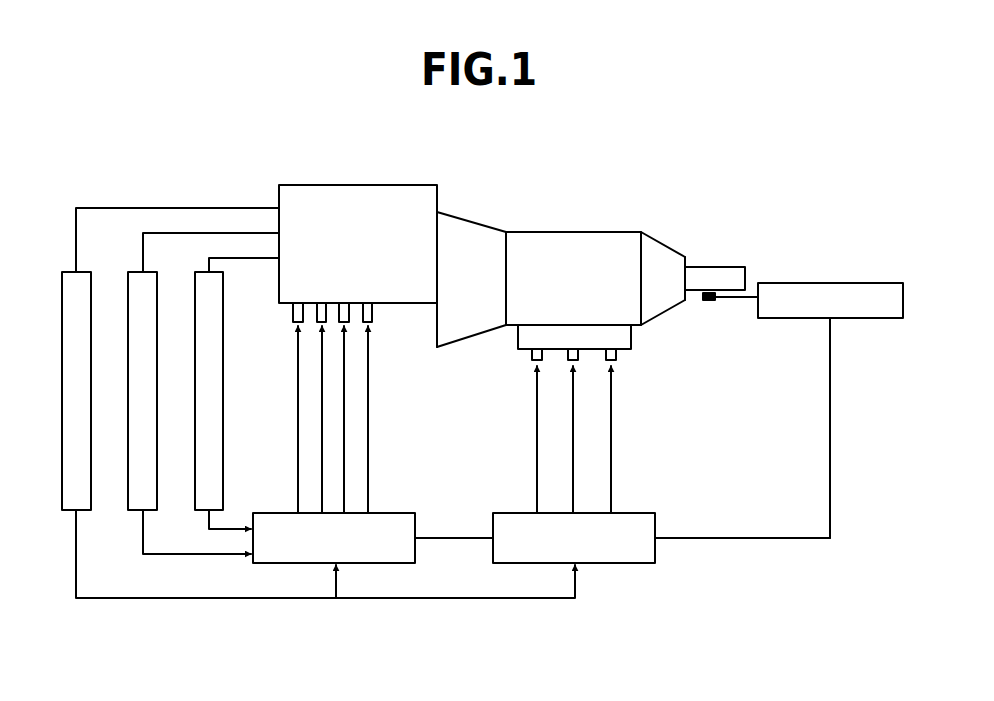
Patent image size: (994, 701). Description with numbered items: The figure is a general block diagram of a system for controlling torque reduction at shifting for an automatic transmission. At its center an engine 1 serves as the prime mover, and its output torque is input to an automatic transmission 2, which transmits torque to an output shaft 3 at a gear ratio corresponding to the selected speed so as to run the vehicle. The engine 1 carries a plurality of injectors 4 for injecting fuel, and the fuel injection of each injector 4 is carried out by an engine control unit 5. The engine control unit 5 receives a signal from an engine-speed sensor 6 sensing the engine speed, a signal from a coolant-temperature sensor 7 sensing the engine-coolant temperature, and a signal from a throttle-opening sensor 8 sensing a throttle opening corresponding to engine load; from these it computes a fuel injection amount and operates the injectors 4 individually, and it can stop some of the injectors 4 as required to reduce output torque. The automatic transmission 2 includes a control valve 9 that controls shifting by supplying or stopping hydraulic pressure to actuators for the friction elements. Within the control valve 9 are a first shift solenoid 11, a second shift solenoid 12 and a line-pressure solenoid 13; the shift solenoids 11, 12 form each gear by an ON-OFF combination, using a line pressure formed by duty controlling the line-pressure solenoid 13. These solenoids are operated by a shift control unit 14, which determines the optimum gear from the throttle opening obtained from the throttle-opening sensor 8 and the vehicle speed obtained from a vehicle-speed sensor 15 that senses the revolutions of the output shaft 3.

The engine 1 is at (356, 185).
The automatic transmission 2 is at (548, 231).
The output shaft 3 is at (711, 267).
The injectors 4 is at (317, 314).
The engine control unit 5 is at (387, 513).
The engine-speed sensor 6 is at (223, 298).
The coolant-temperature sensor 7 is at (157, 278).
The throttle-opening sensor 8 is at (91, 278).
The control valve 9 is at (631, 333).
The first shift solenoid 11 is at (568, 361).
The second shift solenoid 12 is at (616, 355).
The line-pressure solenoid 13 is at (532, 356).
The shift control unit 14 is at (630, 513).
The vehicle-speed sensor 15 is at (842, 283).